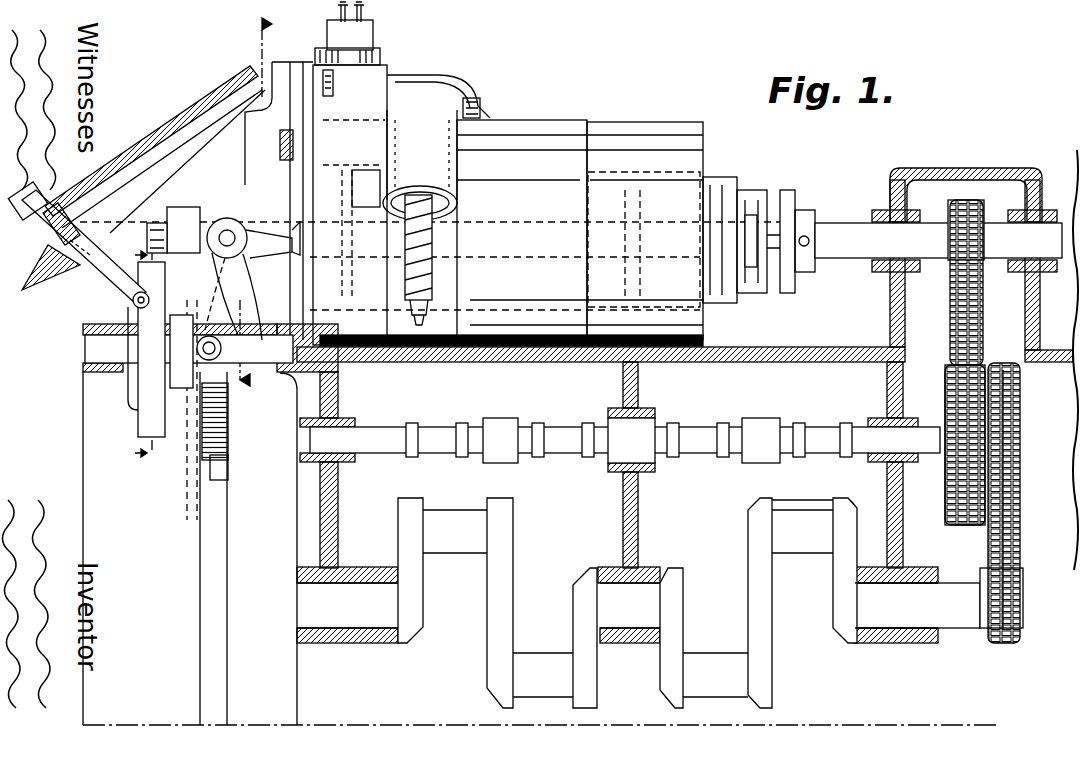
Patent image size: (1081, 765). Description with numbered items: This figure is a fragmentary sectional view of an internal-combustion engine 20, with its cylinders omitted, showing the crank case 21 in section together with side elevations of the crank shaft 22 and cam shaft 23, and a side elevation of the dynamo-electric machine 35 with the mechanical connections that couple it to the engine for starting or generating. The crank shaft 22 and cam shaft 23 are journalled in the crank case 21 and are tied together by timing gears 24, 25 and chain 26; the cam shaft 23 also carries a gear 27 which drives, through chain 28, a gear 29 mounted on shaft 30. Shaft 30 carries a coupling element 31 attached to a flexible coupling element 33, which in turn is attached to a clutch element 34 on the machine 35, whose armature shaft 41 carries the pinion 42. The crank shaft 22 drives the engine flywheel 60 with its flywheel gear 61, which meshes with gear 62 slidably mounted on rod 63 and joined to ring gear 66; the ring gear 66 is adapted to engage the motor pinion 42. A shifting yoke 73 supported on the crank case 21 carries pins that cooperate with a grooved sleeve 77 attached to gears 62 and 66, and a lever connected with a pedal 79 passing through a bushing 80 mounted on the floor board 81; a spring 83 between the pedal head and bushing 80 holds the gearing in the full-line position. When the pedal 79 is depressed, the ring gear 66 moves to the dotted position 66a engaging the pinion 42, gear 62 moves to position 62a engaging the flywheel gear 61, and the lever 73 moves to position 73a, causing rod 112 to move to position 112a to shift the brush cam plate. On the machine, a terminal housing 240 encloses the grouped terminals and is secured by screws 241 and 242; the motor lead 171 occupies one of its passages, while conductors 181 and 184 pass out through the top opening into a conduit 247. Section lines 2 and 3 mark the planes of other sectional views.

The section line 2- 2 is at (259, 199).
The section line 3- 3 is at (132, 354).
The combustion engine 20 is at (83, 392).
The crank case 21 is at (805, 348).
The crank shaft 22 is at (680, 585).
The cam shaft 23 is at (692, 435).
The timing gear 24 is at (1020, 578).
The timing gear 25 is at (1012, 490).
The chain 26 is at (1012, 535).
The gear 27 is at (948, 387).
The chain 28 is at (980, 305).
The gear 29 is at (982, 215).
The shaft 30 is at (838, 223).
The coupling element 31 is at (790, 190).
The flexible coupling element 33 is at (752, 268).
The clutch element 34 is at (745, 190).
The dynamo-electric-machine 35 is at (630, 110).
The armature shaft 41 is at (160, 222).
The pinion 42 is at (182, 210).
The engine flywheel 60 is at (245, 598).
The flywheel gear 61 is at (215, 462).
The gear 62 is at (180, 400).
The dotted line position of gear 62 62a is at (228, 425).
The rod 63 is at (262, 336).
The ring gear 66 is at (138, 420).
The dotted line position of ring gear 66 66a is at (181, 410).
The shifting yoke 73 is at (260, 262).
The dotted line position of shifting lever 73 73a is at (270, 280).
The grooved sleeve 77 is at (222, 383).
The pedal 79 is at (105, 268).
The bushing 80 is at (48, 238).
The floor board 81 is at (215, 95).
The spring 83 is at (55, 205).
The rod 112 is at (300, 250).
The dotted line position of rod 112 112a is at (285, 222).
The motor lead 171 is at (430, 300).
The conductor 181 is at (362, 14).
The conductor 184 is at (340, 14).
The terminal housing 240 is at (395, 80).
The screw 241 is at (335, 90).
The screw 242 is at (472, 98).
The conduit 247 is at (355, 42).